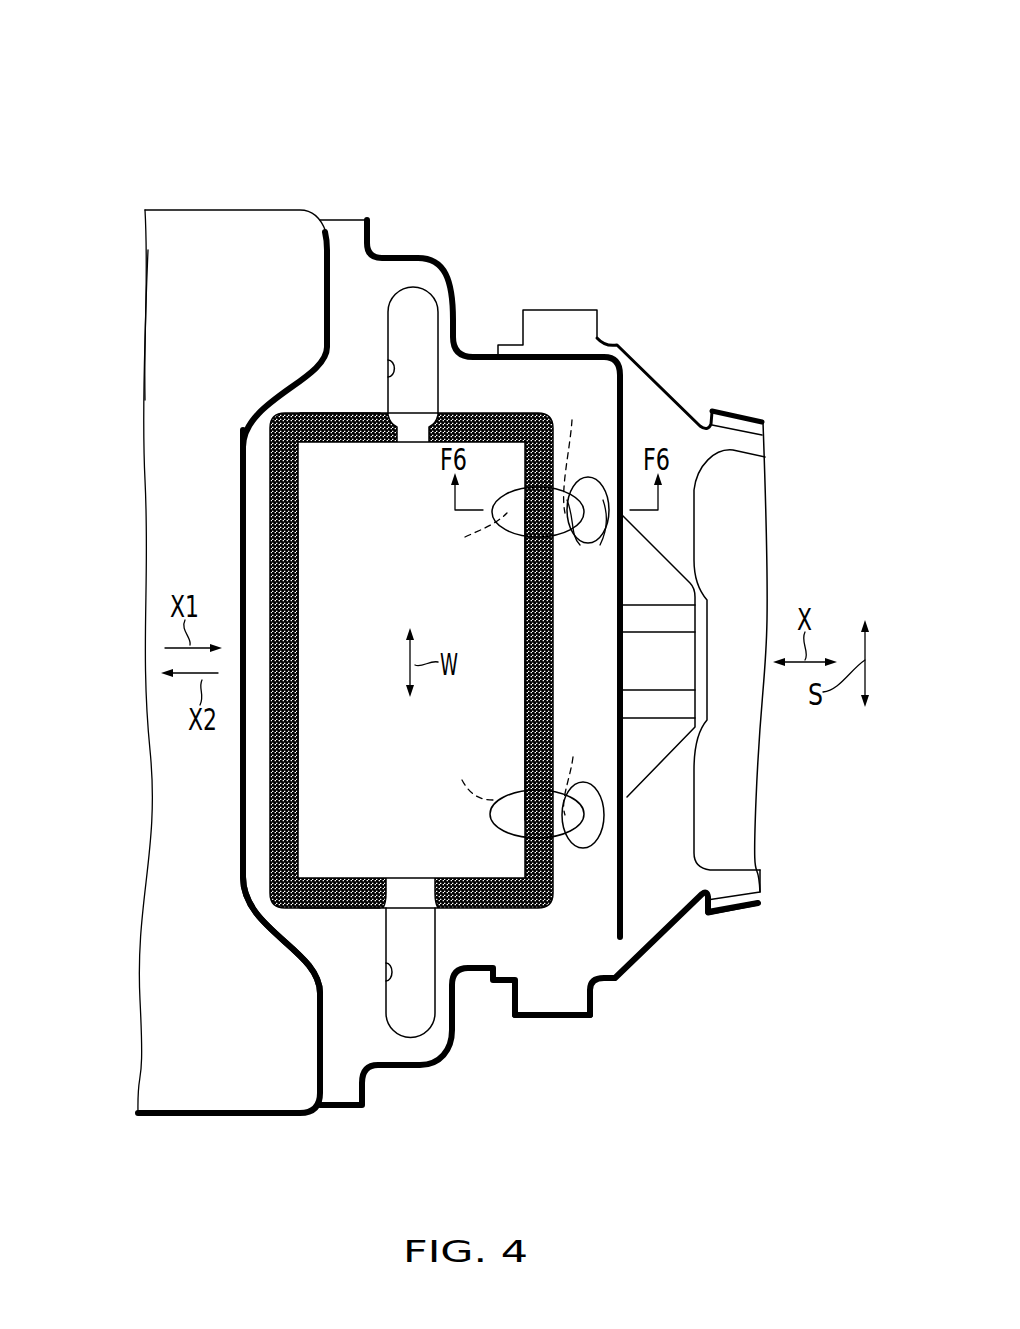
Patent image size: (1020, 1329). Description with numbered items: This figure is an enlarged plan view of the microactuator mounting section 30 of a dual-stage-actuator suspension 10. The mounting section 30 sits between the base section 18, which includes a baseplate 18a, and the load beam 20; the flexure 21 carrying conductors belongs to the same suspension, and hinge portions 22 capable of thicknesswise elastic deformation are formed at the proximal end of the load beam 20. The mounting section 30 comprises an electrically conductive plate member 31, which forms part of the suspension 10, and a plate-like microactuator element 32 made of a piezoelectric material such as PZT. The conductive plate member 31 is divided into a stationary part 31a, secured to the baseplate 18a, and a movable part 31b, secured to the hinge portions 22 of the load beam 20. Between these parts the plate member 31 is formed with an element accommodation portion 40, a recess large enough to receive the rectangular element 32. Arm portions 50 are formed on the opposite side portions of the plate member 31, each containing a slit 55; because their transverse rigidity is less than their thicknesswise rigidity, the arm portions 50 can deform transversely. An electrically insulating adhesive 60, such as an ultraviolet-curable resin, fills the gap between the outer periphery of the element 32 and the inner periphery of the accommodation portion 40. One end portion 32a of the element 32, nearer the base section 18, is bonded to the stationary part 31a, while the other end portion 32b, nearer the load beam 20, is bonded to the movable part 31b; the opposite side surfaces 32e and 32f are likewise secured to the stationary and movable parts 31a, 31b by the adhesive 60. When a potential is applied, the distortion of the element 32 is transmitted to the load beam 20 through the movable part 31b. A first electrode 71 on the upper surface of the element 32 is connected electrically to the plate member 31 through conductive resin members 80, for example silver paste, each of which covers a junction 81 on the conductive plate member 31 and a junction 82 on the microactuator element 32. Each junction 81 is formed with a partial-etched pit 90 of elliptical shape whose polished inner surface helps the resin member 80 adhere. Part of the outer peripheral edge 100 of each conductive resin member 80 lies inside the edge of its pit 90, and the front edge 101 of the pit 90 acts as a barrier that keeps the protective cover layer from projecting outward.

The suspension 10 is at (695, 1065).
The base section 18 is at (167, 205).
The baseplate 18a is at (170, 352).
The load beam 20 is at (747, 417).
The flexure 21 is at (660, 602).
The hinge portions 22 is at (657, 433).
The microactuator mounting section 30 is at (496, 90).
The conductive plate member 31 is at (348, 240).
The stationary part 31a is at (307, 937).
The movable part 31b is at (567, 937).
The microactuator element 32 is at (355, 775).
The end portion 32a is at (307, 745).
The end portion 32b is at (530, 705).
The side surface 32e is at (360, 435).
The side surface 32f is at (366, 892).
The element accommodation portion 40 is at (260, 456).
The arm portions 50 is at (420, 282).
The slits 55 is at (387, 377).
The adhesive 60 is at (278, 522).
The first electrode 71 is at (410, 527).
The conductive resin member 80 is at (530, 513).
The junction 81 is at (574, 602).
The junction 82 is at (469, 656).
The pit 90 is at (593, 497).
The outer peripheral edge 100 is at (588, 520).
The front edge 101 is at (606, 520).